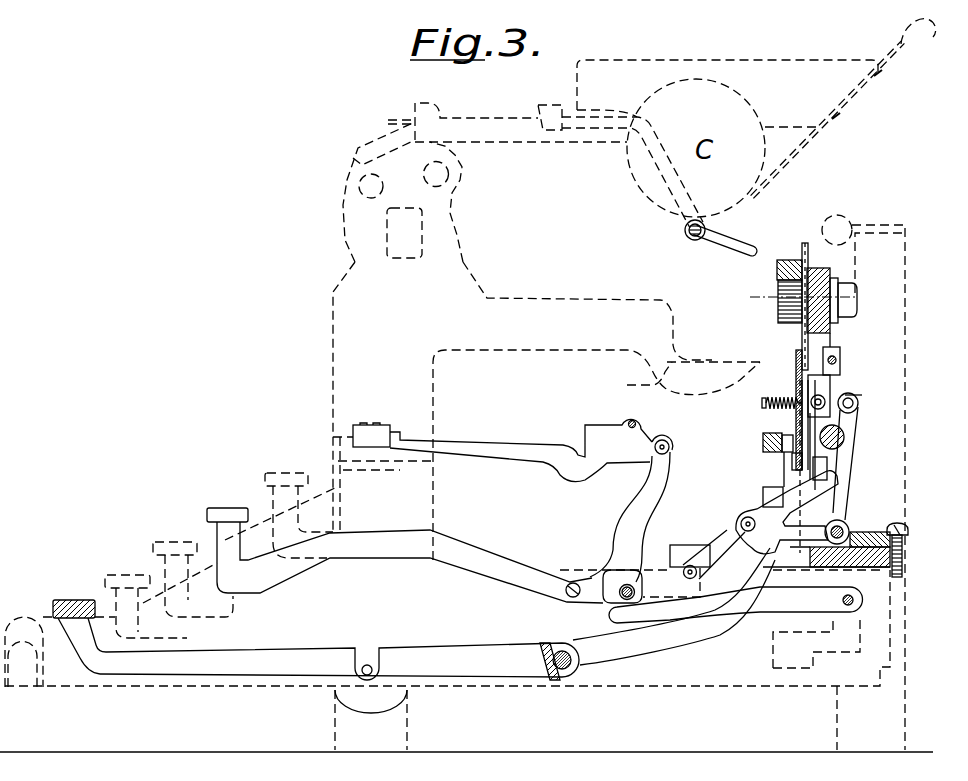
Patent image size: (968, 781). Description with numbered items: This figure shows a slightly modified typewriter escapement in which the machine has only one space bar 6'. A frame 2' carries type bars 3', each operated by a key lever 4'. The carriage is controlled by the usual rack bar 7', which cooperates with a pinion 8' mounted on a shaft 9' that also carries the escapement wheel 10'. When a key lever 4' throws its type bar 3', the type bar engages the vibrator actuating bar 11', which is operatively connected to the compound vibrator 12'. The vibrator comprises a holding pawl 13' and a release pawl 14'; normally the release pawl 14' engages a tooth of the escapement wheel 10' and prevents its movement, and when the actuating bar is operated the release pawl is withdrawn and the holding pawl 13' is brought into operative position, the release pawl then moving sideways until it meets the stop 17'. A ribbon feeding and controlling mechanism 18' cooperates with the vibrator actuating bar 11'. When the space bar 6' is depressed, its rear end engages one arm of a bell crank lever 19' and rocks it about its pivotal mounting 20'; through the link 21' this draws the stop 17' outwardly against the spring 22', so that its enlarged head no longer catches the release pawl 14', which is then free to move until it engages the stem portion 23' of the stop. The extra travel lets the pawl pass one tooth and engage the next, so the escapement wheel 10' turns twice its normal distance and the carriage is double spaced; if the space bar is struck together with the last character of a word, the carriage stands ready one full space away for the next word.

The frame 2' is at (470, 384).
The type bar 3' is at (513, 511).
The key lever 4' is at (330, 594).
The space bar 6' is at (74, 594).
The rack bar 7' is at (786, 247).
The pinion 8' is at (769, 293).
The shaft 9' is at (797, 311).
The escapement wheel 10' is at (819, 279).
The vibrator actuating bar 11' is at (713, 377).
The compound vibrator 12' is at (777, 458).
The holding pawl 13' is at (774, 399).
The release pawl 14' is at (846, 348).
The stop 17' is at (848, 389).
The ribbon feeding and controlling mechanism 18' is at (754, 525).
The bell crank lever 19' is at (863, 456).
The pivotal mounting 20' is at (859, 521).
The link 21' is at (895, 378).
The spring 22' is at (758, 432).
The stem portion 23' is at (760, 408).